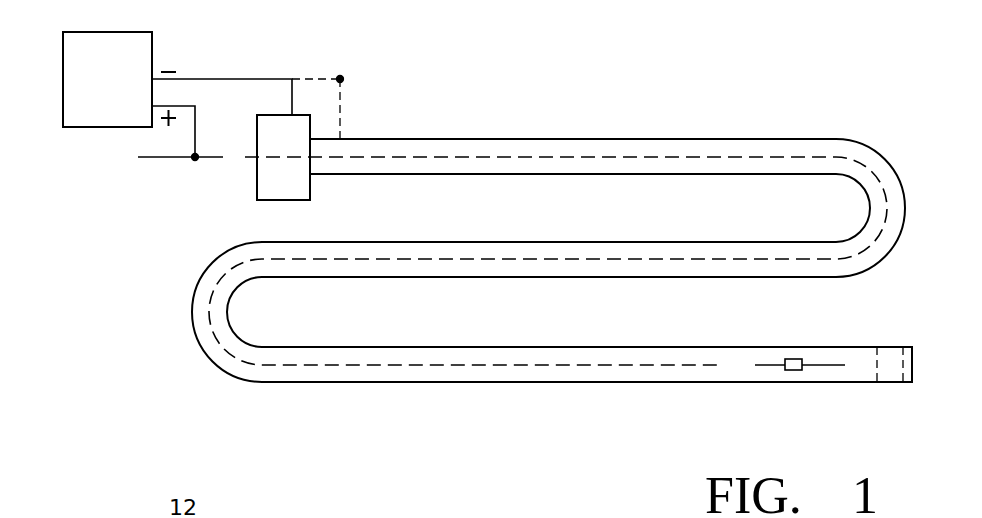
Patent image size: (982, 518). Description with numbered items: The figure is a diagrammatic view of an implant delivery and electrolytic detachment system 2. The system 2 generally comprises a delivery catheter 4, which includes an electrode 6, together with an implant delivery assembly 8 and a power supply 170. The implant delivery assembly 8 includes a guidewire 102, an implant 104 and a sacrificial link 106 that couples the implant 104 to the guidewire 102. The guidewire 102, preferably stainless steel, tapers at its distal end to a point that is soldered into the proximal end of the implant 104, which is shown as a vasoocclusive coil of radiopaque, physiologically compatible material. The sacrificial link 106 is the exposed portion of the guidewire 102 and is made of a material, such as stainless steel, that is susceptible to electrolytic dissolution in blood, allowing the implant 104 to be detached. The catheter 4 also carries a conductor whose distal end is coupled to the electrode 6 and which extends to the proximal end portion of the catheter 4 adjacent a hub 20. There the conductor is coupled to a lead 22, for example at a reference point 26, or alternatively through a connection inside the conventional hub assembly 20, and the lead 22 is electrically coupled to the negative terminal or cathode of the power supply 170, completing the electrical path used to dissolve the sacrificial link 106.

The implant delivery and electrolytic detachment system 2 is at (541, 96).
The delivery catheter 4 is at (758, 138).
The electrode 6 is at (343, 120).
The implant delivery assembly 8 is at (670, 366).
The hub 20 is at (311, 115).
The lead 22 is at (232, 77).
The reference point 26 is at (340, 74).
The guidewire 102 is at (212, 162).
The implant 104 is at (823, 368).
The sacrificial link 106 is at (795, 372).
The power supply 170 is at (133, 95).